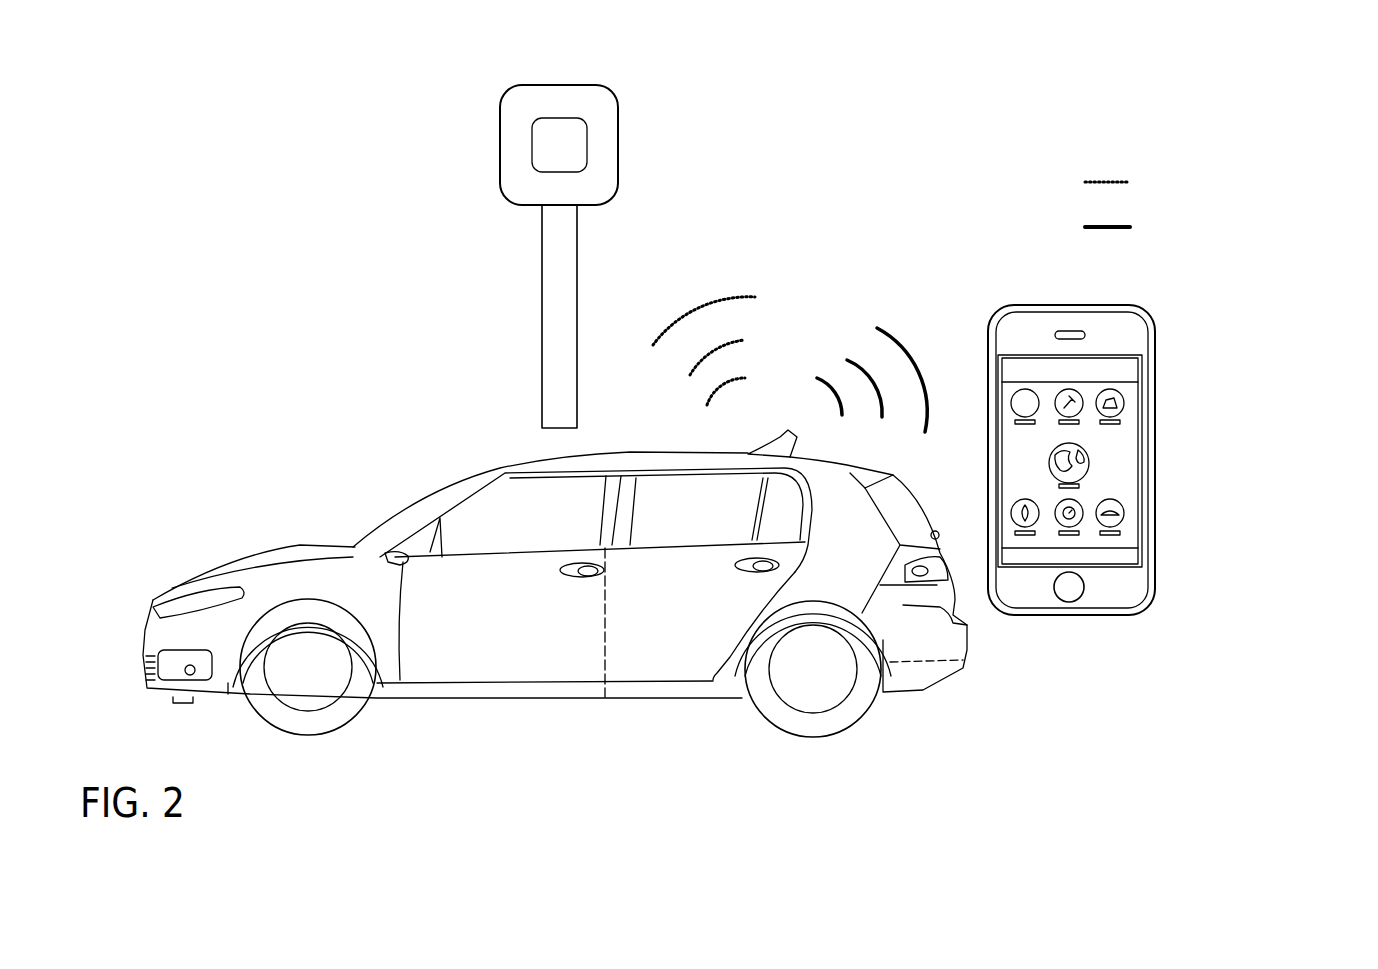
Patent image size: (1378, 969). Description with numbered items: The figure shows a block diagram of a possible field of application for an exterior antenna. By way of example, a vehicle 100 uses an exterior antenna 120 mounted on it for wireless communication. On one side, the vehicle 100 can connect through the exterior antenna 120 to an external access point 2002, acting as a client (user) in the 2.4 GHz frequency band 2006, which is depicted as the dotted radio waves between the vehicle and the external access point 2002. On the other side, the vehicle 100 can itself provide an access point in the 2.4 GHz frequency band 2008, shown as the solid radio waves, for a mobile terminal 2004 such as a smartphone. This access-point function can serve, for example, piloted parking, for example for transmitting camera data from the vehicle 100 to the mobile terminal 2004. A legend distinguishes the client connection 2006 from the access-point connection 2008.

The vehicle 100 is at (636, 698).
The exterior antenna 120 is at (788, 441).
The external access point 2002 is at (607, 158).
The mobile terminal 2004 is at (1137, 605).
The 2.4 GHz frequency band (client connection) 2006 is at (1277, 178).
The 2.4 GHz frequency band (access point) 2008 is at (1210, 238).